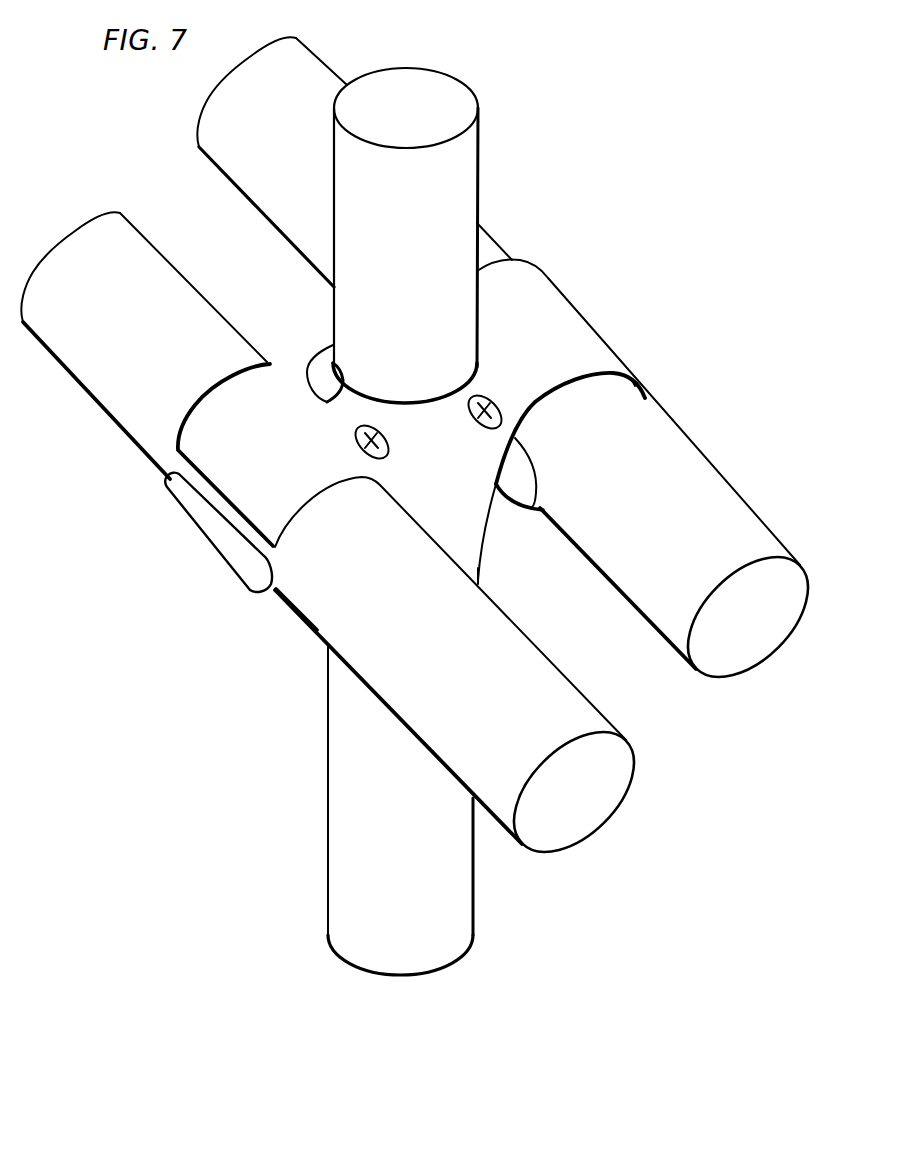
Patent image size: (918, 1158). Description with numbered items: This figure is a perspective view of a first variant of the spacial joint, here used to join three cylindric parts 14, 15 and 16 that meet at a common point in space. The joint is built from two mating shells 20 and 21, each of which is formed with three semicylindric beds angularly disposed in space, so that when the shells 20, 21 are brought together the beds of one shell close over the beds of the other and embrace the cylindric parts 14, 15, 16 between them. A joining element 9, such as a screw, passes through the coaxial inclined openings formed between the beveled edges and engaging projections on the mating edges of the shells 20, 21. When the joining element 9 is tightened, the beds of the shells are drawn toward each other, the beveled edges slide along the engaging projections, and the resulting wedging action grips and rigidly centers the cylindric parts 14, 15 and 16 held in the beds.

The joining element 9 is at (357, 430).
The cylindric part 14 is at (123, 393).
The cylindric part 15 is at (357, 808).
The cylindric part 16 is at (668, 597).
The shell 20 is at (578, 357).
The shell 21 is at (240, 550).